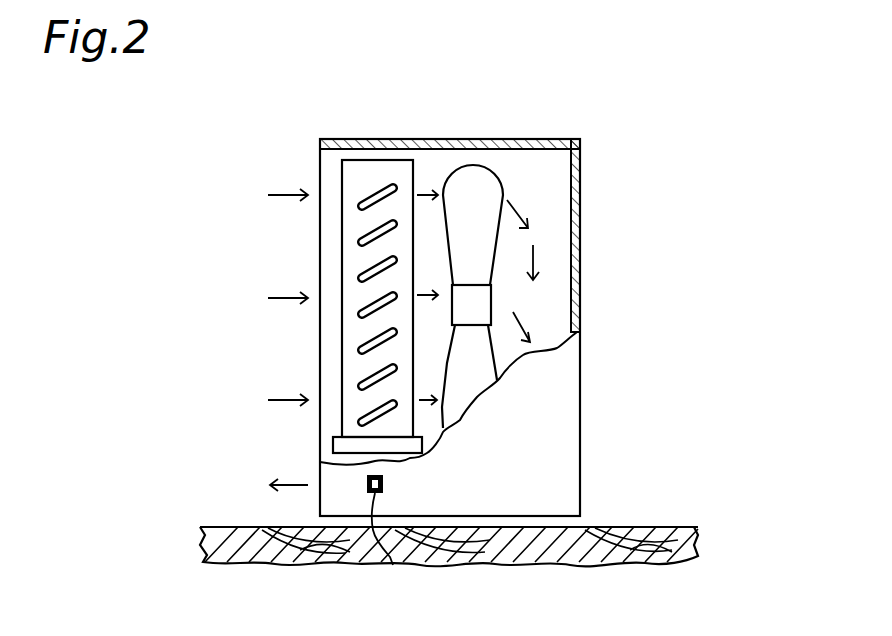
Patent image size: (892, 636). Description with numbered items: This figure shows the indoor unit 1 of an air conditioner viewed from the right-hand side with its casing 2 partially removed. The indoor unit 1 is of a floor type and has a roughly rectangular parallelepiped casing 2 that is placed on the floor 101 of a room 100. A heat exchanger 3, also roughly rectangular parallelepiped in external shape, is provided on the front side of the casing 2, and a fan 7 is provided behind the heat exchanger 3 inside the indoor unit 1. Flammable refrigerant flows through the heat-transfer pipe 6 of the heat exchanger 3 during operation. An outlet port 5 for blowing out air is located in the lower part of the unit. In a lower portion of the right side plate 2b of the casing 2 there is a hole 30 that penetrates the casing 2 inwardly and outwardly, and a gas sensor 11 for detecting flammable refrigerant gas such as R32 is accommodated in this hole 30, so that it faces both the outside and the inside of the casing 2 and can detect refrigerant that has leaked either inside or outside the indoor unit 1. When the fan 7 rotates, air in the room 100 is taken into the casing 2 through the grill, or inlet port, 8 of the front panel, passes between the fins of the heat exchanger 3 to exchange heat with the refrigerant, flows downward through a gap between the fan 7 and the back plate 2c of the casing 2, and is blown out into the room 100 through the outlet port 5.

The room 100 is at (238, 160).
The indoor unit 1 is at (311, 133).
The casing 2 is at (490, 139).
The right side plate 2b is at (527, 395).
The back plate 2c is at (580, 297).
The heat exchanger 3 is at (383, 160).
The outlet port 5 is at (320, 475).
The heat-transfer pipe 6 is at (370, 193).
The fan 7 is at (503, 194).
The grill (inlet port) 8 is at (320, 262).
The gas sensor 11 is at (385, 482).
The hole 30 is at (394, 544).
The floor 101 is at (665, 527).